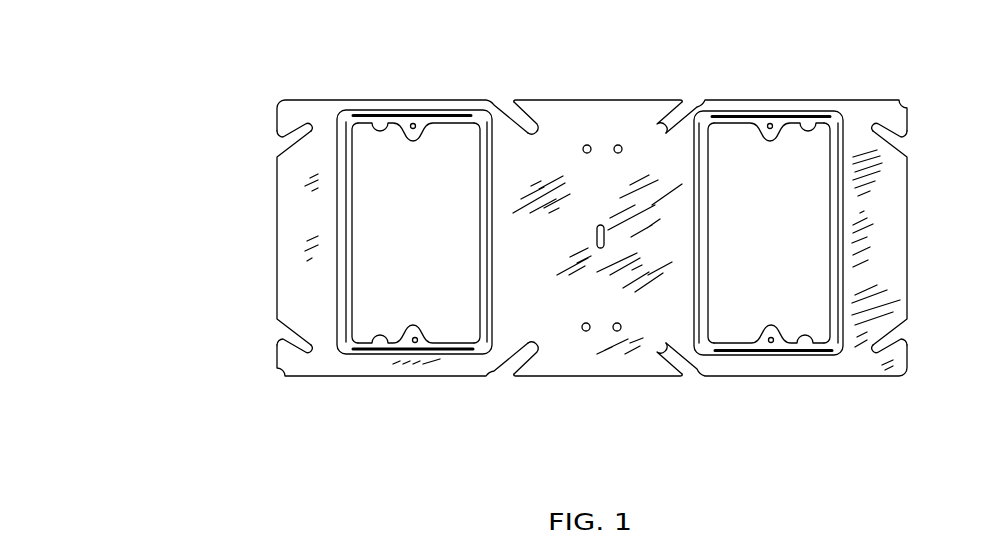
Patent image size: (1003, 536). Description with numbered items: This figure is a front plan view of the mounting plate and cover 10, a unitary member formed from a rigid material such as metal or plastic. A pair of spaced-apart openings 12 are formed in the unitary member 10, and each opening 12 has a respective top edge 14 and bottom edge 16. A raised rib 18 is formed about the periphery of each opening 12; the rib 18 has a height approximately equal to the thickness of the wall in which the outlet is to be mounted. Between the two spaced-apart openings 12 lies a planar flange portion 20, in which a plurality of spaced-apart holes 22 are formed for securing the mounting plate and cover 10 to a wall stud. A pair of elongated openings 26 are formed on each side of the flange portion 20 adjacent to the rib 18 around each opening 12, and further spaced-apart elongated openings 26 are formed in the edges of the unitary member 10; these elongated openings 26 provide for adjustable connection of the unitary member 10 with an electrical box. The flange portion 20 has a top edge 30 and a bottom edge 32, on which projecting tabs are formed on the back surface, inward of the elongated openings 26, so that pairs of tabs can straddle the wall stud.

The mounting plate and cover 10 is at (269, 397).
The opening 12 is at (389, 176).
The top edge 14 is at (372, 125).
The bottom edge 16 is at (389, 340).
The raised rib 18 is at (337, 210).
The planar flange portion 20 is at (603, 182).
The hole 22 is at (586, 332).
The elongated opening 26 is at (276, 136).
The top edge 30 is at (607, 100).
The bottom edge 32 is at (595, 378).